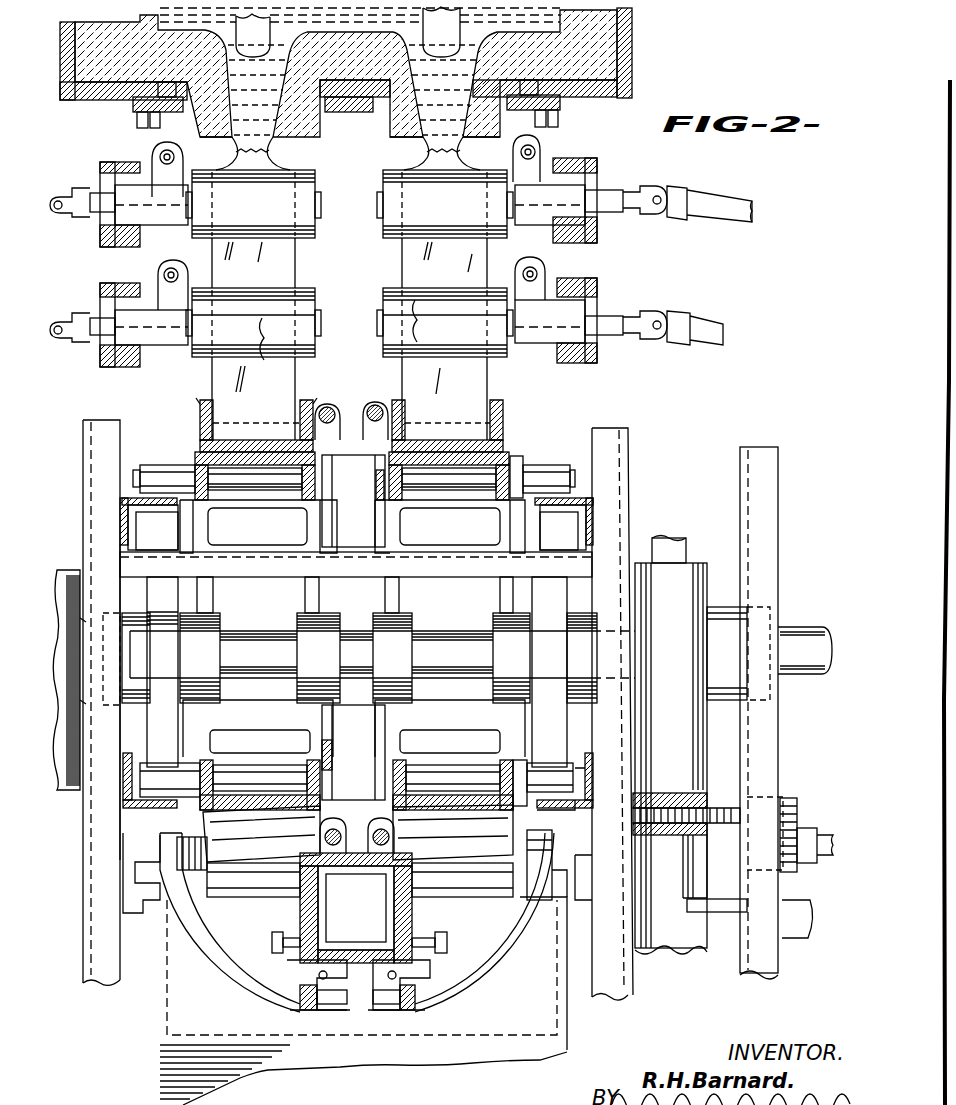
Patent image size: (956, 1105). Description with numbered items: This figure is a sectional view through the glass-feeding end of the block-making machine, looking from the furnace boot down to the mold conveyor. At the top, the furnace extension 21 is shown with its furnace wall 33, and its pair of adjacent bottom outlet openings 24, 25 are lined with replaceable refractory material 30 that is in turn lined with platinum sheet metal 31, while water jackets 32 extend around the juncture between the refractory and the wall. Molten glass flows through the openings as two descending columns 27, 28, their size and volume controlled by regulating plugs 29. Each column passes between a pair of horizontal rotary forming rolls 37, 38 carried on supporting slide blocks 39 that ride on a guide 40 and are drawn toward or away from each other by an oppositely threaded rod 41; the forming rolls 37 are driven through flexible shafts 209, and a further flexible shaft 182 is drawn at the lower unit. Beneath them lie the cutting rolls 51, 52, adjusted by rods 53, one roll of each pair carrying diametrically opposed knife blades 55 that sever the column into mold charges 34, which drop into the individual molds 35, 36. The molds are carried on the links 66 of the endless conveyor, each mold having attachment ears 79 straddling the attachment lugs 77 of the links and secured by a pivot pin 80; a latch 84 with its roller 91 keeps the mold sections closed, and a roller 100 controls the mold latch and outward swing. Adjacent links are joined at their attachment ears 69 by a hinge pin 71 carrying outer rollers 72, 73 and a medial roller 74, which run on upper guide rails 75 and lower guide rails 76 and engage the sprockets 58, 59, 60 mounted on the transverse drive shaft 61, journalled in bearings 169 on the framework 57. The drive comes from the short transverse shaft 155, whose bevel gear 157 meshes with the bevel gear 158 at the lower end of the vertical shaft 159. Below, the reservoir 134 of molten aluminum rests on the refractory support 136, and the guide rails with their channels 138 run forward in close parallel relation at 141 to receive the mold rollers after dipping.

The boot or extension 21 is at (626, 22).
The furnace wall 33 is at (630, 78).
The water jackets 32 is at (135, 100).
The regulating plugs 29 is at (348, 32).
The platinum sheet metal 31 is at (278, 95).
The refractory material 30 is at (303, 122).
The bottom outlet opening 25 is at (285, 150).
The bottom outlet opening 24 is at (414, 142).
The elongated rod 41 is at (158, 157).
The supporting slide blocks 39 is at (185, 152).
The guide 40 is at (100, 168).
The flexible shafts 209 is at (716, 203).
The drive shaft 182 is at (705, 328).
The adjusting rods 53 is at (163, 272).
The forming rolls 38 is at (306, 194).
The forming rolls 37 is at (383, 208).
The cutting rolls 52 is at (313, 303).
The cutting rolls 51 is at (395, 316).
The knife blades 55 is at (258, 362).
The descending column or stream 28 is at (293, 266).
The descending column or stream 27 is at (402, 262).
The mold charges 34 is at (296, 384).
The mold 36 is at (204, 402).
The mold 35 is at (504, 410).
The pivot pin 80 is at (336, 409).
The links 66 is at (268, 466).
The hinge pin 71 is at (235, 482).
The outer roller 73 is at (158, 466).
The outer roller 72 is at (545, 465).
The lower guide rails 76 is at (595, 772).
The attachment ears 69 is at (517, 458).
The medially disposed roller 74 is at (360, 470).
The upper guide rails 75 is at (122, 510).
The bearings 169 is at (70, 592).
The framework 57 is at (628, 449).
The drive shaft 61 is at (283, 646).
The sprocket 60 is at (214, 665).
The sprocket 59 is at (368, 665).
The sprocket 58 is at (560, 672).
The vertically extending shaft 159 is at (682, 550).
The bevel gear 158 is at (725, 802).
The bevel gear 157 is at (795, 810).
The short transverse shaft 155 is at (820, 866).
The attachment lugs 77 is at (325, 820).
The latch 84 is at (298, 884).
The attachment ears 79 is at (356, 908).
The roller 91 is at (272, 938).
The parallel portion of guide rails 141 is at (318, 1005).
The grooves or channels 138 is at (228, 973).
The reservoir 134 is at (568, 1012).
The refractory support 136 is at (434, 1062).
The roller 100 is at (558, 842).